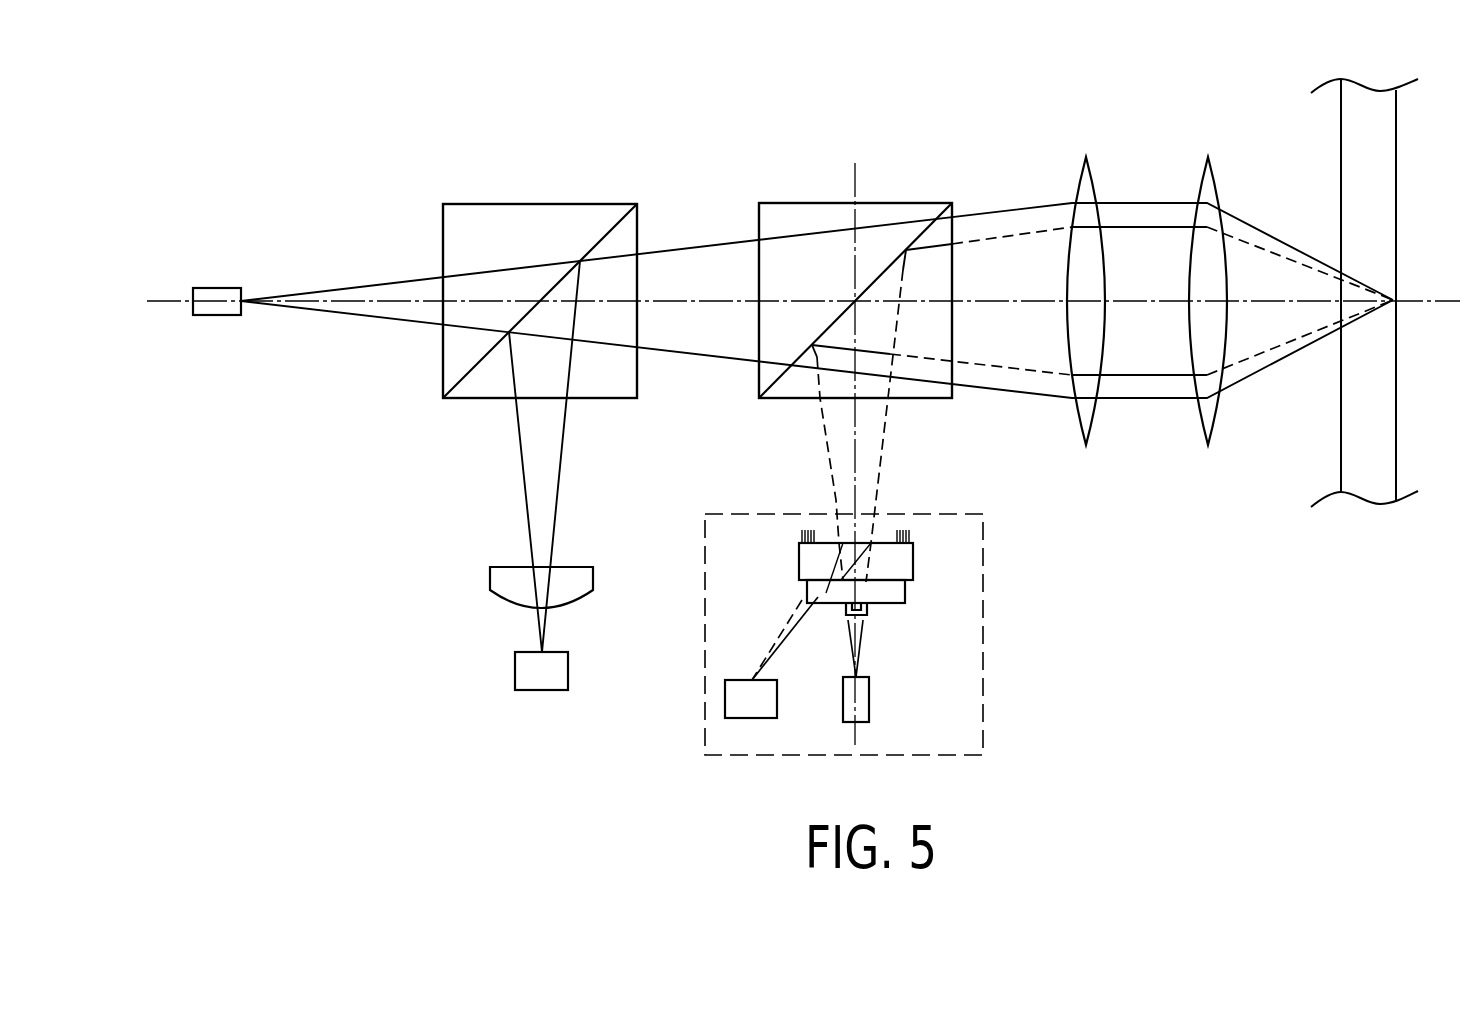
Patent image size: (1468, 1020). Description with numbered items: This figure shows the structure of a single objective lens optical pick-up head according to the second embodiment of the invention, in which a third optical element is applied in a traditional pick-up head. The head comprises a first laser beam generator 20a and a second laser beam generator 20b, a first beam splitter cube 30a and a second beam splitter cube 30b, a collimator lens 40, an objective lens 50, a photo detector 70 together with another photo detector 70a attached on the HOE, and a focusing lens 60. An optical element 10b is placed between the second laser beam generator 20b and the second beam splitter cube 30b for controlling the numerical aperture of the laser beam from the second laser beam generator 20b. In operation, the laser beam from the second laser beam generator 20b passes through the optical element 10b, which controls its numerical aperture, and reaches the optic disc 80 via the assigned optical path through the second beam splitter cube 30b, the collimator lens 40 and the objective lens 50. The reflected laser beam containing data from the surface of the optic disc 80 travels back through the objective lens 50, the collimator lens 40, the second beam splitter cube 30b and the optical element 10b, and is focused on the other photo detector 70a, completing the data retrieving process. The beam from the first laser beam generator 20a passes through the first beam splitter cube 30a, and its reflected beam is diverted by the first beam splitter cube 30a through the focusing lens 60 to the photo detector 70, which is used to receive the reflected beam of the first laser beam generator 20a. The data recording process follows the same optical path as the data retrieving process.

The first laser beam generator 20a is at (214, 297).
The first beam splitter cube 30a is at (464, 196).
The second beam splitter cube 30b is at (778, 196).
The collimator lens 40 is at (1087, 185).
The objective lens 50 is at (1210, 185).
The optic disc 80 is at (1383, 138).
The focusing lens 60 is at (497, 585).
The photo detector 70 is at (522, 678).
The optical element 10b is at (912, 593).
The photo detector 70a is at (730, 710).
The second laser beam generator 20b is at (866, 712).